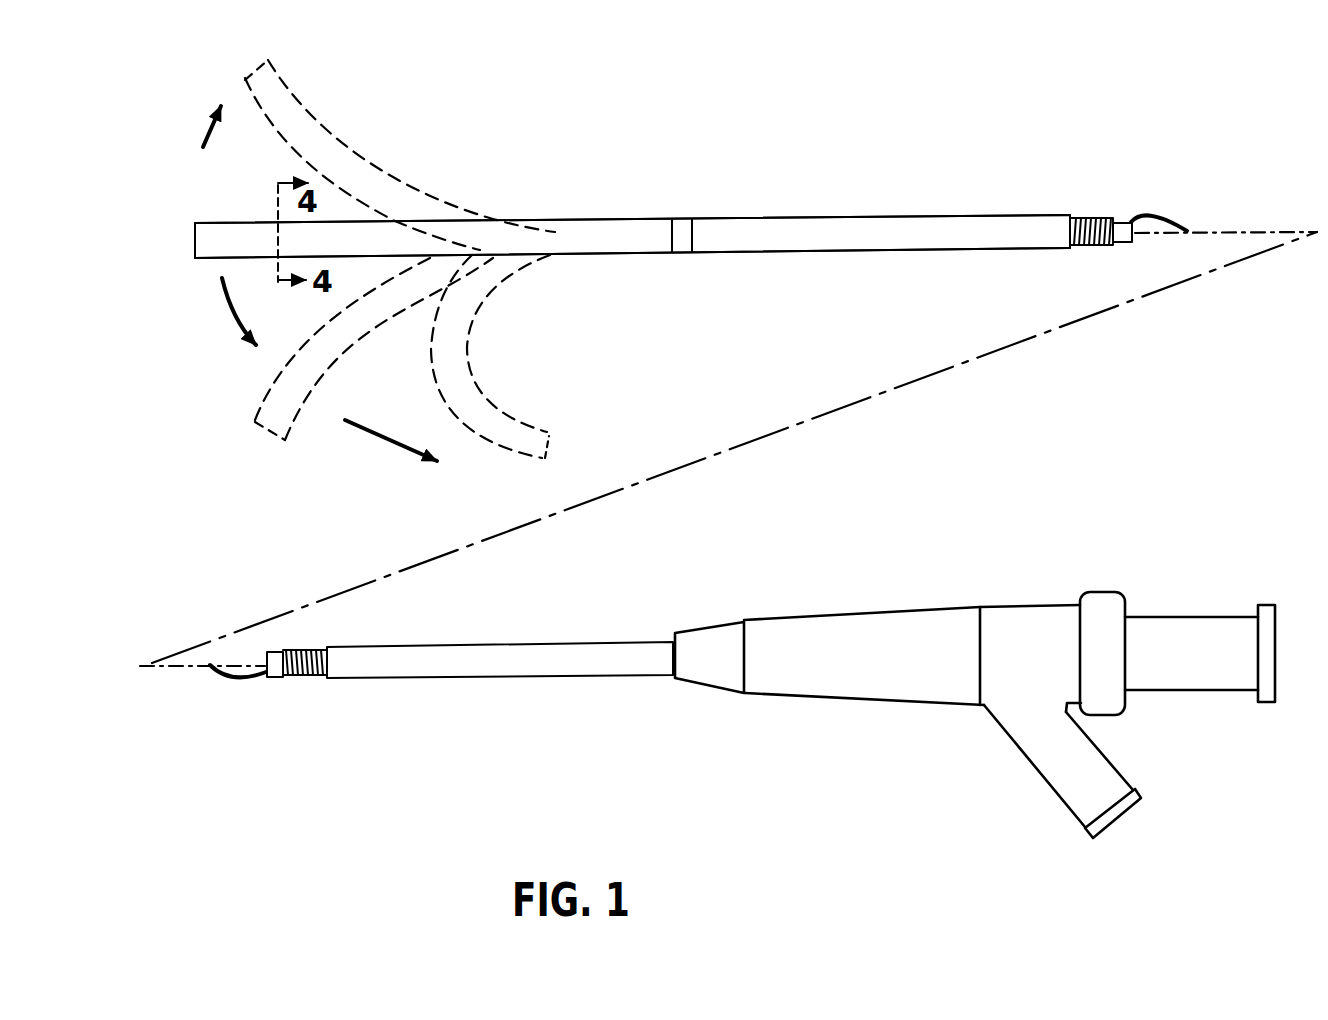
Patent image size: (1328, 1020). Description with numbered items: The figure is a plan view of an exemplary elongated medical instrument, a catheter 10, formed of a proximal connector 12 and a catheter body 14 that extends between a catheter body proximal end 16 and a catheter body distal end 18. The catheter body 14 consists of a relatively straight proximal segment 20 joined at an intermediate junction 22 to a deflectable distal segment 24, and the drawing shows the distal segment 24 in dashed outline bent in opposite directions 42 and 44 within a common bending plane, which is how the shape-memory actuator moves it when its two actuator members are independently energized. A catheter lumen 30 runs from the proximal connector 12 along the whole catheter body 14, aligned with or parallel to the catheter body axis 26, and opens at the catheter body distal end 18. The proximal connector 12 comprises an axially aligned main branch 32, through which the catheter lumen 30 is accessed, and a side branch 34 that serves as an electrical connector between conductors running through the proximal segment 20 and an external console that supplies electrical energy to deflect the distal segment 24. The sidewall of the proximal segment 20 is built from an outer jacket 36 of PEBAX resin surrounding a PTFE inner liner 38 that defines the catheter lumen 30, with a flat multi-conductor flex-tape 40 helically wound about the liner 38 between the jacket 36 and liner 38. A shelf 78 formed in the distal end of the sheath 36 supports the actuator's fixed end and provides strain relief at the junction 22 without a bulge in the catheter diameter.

The catheter 10 is at (558, 810).
The proximal connector 12 is at (951, 583).
The catheter body 14 is at (892, 170).
The catheter body proximal end 16 is at (676, 640).
The catheter body distal end 18 is at (208, 193).
The proximal segment 20 is at (961, 199).
The intermediate junction 22 is at (693, 197).
The deflectable distal segment 24 is at (517, 196).
The catheter body axis 26 is at (797, 437).
The catheter lumen 30 is at (194, 242).
The main branch 32 is at (1165, 608).
The side branch 34 is at (1040, 778).
The outer jacket 36 is at (927, 239).
The inner liner 38 is at (1119, 226).
The flex-tape 40 is at (1153, 218).
The direction 42 is at (361, 155).
The direction 44 is at (371, 358).
The shelf 78 is at (603, 240).